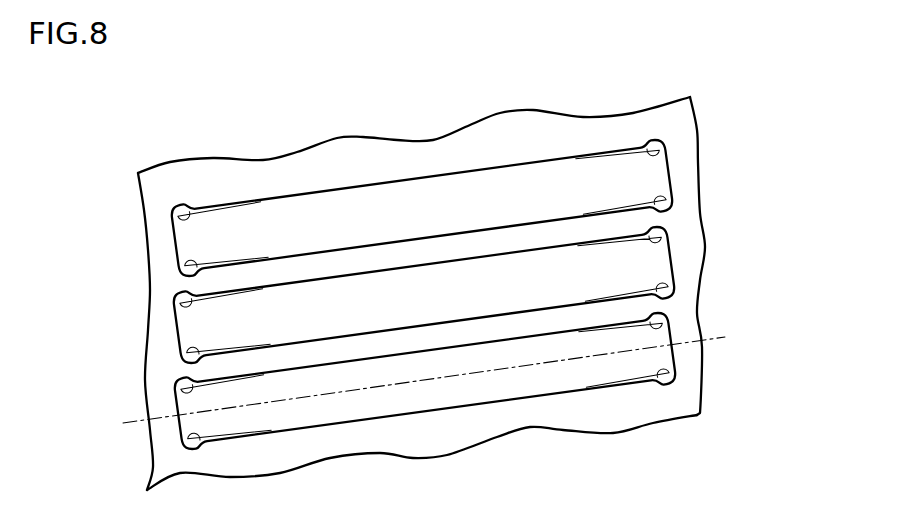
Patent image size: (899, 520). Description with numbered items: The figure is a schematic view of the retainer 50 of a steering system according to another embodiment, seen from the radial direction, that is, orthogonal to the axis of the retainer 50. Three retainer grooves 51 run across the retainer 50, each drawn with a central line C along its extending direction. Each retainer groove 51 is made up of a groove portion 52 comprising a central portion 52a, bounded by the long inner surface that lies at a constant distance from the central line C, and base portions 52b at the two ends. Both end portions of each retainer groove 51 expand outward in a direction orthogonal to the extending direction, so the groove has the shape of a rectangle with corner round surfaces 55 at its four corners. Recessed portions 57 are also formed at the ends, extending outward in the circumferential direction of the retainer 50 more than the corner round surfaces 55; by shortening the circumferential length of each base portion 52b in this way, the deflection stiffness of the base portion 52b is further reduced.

The retainer 50 is at (260, 156).
The retainer groove 51 is at (425, 184).
The groove portion 52 is at (501, 306).
The central portion 52a is at (453, 247).
The base portion 52b is at (623, 223).
The corner round surface 55 is at (166, 232).
The recessed portion 57 is at (667, 152).
The central line C is at (135, 418).